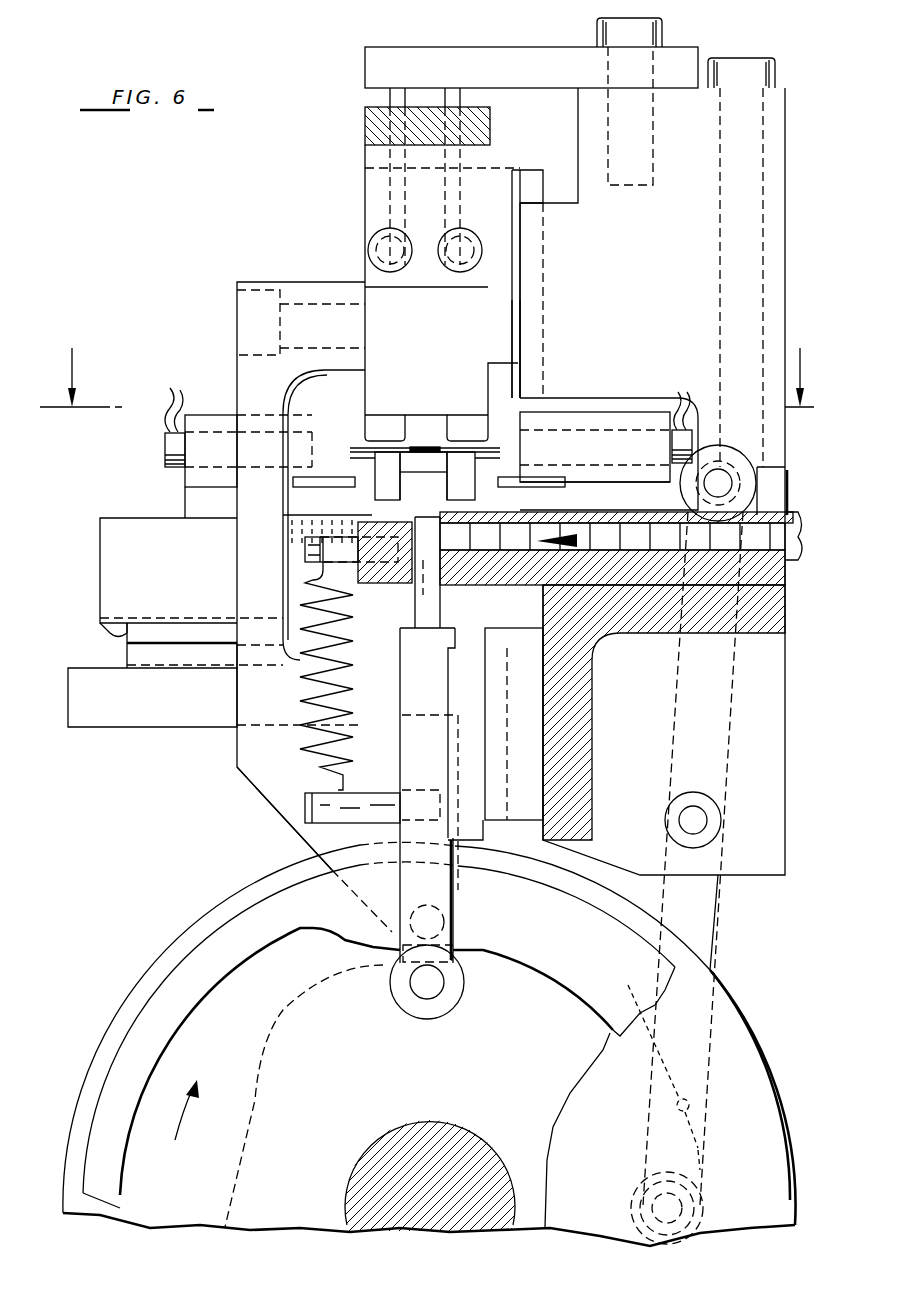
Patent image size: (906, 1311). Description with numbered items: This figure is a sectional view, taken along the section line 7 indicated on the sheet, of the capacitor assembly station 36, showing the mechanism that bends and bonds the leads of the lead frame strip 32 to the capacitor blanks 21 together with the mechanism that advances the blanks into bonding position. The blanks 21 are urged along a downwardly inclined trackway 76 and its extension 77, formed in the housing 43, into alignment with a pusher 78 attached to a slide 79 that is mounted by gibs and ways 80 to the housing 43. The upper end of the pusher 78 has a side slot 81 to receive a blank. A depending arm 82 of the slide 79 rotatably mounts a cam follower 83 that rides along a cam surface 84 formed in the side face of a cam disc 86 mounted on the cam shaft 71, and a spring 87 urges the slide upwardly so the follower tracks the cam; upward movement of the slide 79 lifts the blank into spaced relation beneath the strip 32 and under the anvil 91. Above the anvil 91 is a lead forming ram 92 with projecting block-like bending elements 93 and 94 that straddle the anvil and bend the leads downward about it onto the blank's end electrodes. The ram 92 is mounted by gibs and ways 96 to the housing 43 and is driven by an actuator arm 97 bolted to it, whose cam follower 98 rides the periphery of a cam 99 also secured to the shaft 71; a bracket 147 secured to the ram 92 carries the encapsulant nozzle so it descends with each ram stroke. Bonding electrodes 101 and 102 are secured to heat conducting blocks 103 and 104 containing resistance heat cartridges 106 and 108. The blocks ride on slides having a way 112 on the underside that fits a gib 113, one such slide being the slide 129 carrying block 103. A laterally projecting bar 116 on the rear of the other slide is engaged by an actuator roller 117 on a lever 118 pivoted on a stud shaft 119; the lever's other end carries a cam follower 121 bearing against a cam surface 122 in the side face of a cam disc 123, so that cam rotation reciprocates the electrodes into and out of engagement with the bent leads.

The section line 7- 7 is at (427, 364).
The capacitor blank 21 is at (650, 540).
The lead frame strip 32 is at (425, 440).
The capacitor assembly station 36 is at (202, 318).
The housing 43 is at (646, 275).
The cam shaft 71 is at (405, 1128).
The inclined trackway 76 is at (800, 560).
The extension 77 is at (600, 548).
The pusher 78 is at (443, 607).
The slide 79 is at (402, 760).
The gibs and ways 80 is at (498, 823).
The side slot 81 is at (418, 592).
The depending arm 82 is at (407, 872).
The cam follower 83 is at (456, 1008).
The cam surface 84 is at (180, 1028).
The cam disc 86 is at (118, 1049).
The spring 87 is at (318, 720).
The anvil 91 is at (410, 468).
The lead forming ram 92 is at (463, 337).
The bending element 93 is at (385, 430).
The bending element 94 is at (465, 430).
The gibs and ways 96 is at (527, 213).
The actuator arm 97 is at (252, 785).
The cam follower 98 is at (388, 932).
The cam 99 is at (270, 1053).
The bonding electrode 101 is at (334, 484).
The bonding electrode 102 is at (507, 485).
The heat conducting block 103 is at (214, 413).
The heat conducting block 104 is at (596, 410).
The resistance heat cartridge 106 is at (165, 449).
The resistance heat cartridge 108 is at (637, 428).
The way 112 is at (96, 633).
The gib 113 is at (96, 644).
The laterally projecting bar 116 is at (758, 470).
The actuator roller 117 is at (712, 442).
The lever 118 is at (675, 752).
The stud shaft 119 is at (706, 806).
The cam follower 121 is at (635, 1196).
The cam surface 122 is at (690, 1101).
The cam disc 123 is at (753, 1032).
The slide 129 is at (120, 528).
The bracket 147 is at (365, 112).